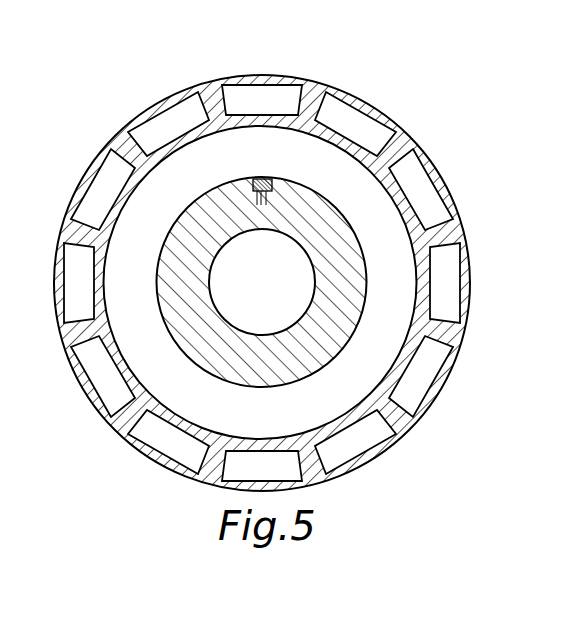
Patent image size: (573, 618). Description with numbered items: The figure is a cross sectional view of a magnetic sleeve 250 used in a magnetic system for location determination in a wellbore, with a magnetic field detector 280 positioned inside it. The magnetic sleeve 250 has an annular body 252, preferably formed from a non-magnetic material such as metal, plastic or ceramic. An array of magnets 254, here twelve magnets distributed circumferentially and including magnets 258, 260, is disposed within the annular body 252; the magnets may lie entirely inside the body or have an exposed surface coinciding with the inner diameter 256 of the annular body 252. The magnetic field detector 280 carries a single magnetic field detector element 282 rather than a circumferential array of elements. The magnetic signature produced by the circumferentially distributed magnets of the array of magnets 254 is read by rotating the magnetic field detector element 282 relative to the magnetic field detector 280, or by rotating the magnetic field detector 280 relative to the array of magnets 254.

The magnetic sleeve 250 is at (366, 78).
The annular body 252 is at (402, 428).
The array of magnets 254 is at (424, 382).
The inner diameter 256 is at (178, 426).
The magnet 258 is at (270, 86).
The magnet 260 is at (372, 108).
The magnetic field detector 280 is at (333, 211).
The magnetic field detector element 282 is at (261, 180).